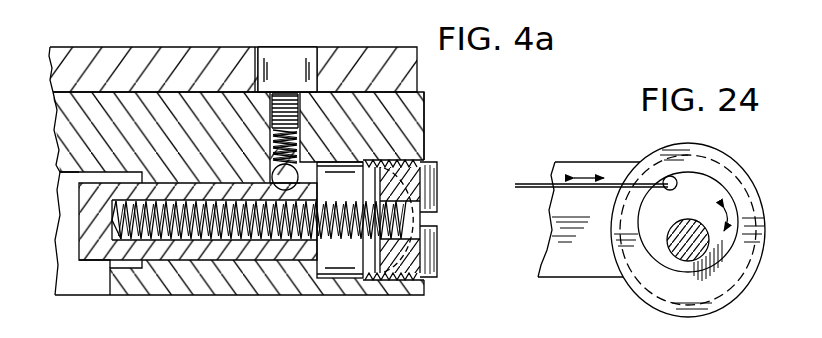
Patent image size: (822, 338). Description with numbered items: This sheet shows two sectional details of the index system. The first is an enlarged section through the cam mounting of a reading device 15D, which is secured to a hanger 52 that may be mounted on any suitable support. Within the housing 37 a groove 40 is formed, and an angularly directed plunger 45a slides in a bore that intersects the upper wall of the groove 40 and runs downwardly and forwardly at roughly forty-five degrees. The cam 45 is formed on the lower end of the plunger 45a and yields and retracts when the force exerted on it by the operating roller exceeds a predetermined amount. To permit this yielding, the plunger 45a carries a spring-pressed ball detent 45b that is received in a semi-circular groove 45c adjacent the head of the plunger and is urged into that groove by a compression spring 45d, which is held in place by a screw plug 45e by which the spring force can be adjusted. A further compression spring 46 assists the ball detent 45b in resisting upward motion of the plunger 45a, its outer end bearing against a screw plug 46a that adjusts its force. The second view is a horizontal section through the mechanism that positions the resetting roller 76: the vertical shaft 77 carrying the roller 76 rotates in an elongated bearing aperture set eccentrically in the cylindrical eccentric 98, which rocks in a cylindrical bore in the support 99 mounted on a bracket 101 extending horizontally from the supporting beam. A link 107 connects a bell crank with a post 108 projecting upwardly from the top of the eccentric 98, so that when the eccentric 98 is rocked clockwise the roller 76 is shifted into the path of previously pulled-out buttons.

In FIG. 4a, the hanger 52 is at (173, 62).
In FIG. 4a, the housing body 37 is at (408, 134).
In FIG. 4a, the reading device 15D is at (432, 96).
In FIG. 4a, the groove 40 is at (90, 276).
In FIG. 4a, the cam 45 is at (79, 219).
In FIG. 4a, the plunger 45a is at (170, 250).
In FIG. 4a, the ball detent 45b is at (300, 182).
In FIG. 4a, the semi-circular groove 45c is at (292, 248).
In FIG. 4a, the compression spring 45d is at (290, 137).
In FIG. 4a, the screw plug 45e is at (285, 98).
In FIG. 4a, the compression spring 46 is at (324, 238).
In FIG. 4a, the screw plug 46a is at (433, 186).
In FIG. 24, the resetting roller 76 is at (730, 298).
In FIG. 24, the eccentric 98 is at (702, 196).
In FIG. 24, the vertical shaft 77 is at (703, 250).
In FIG. 24, the support 99 is at (676, 282).
In FIG. 24, the bracket 101 is at (595, 262).
In FIG. 24, the link 107 is at (540, 188).
In FIG. 24, the post 108 is at (665, 178).